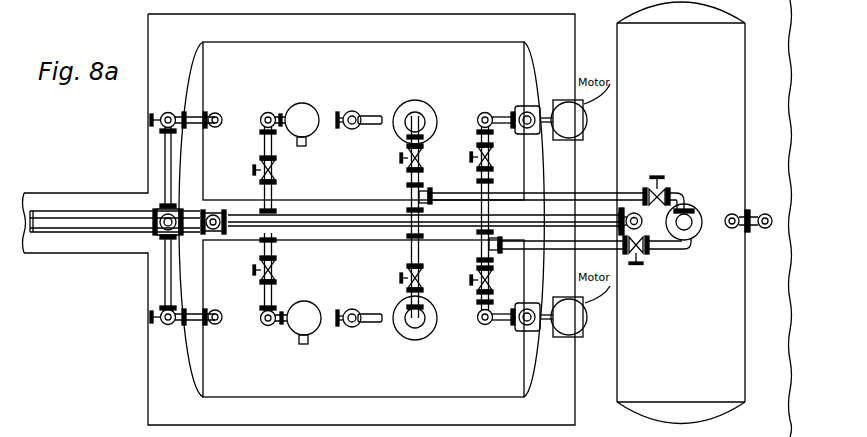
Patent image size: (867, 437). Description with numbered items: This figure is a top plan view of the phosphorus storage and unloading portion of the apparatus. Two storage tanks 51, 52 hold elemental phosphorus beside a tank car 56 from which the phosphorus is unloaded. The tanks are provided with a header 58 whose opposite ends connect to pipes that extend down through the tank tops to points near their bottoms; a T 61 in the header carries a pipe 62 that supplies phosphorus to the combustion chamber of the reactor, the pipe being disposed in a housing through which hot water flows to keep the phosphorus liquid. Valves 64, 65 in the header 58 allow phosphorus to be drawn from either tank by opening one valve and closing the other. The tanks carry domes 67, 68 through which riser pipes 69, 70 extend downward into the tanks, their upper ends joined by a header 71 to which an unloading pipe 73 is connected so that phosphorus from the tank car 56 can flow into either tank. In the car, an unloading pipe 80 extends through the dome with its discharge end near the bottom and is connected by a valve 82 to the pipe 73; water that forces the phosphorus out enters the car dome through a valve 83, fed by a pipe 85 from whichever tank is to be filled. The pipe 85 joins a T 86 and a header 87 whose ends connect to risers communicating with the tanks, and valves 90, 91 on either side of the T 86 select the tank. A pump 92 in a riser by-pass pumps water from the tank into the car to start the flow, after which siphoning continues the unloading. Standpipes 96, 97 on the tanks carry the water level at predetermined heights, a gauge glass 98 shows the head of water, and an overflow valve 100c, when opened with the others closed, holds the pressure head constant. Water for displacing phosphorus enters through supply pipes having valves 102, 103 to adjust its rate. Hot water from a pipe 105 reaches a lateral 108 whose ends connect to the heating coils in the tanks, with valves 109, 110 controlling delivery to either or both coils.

The tank 51 is at (365, 268).
The tank 52 is at (340, 72).
The tank car 56 is at (712, 303).
The header 58 is at (276, 196).
The T 61 is at (258, 213).
The pipe 62 is at (36, 211).
The valve 64 is at (256, 171).
The valve 65 is at (256, 268).
The dome 67 is at (431, 331).
The dome 68 is at (432, 116).
The riser pipe 69 is at (424, 312).
The riser pipe 70 is at (418, 112).
The header 71 is at (411, 253).
The pipe 73 is at (544, 191).
The unloading pipe 80 is at (693, 206).
The valve 82 is at (662, 176).
The valve 83 is at (634, 266).
The pipe 85 is at (544, 250).
The T 86 is at (478, 250).
The header 87 is at (495, 178).
The valve 90 is at (491, 283).
The valve 91 is at (493, 159).
The pump 92 is at (498, 112).
The standpipe 96 is at (321, 313).
The standpipe 97 is at (313, 108).
The gauge glass 98 is at (302, 146).
The overflow valve 100c is at (279, 118).
The valve 102 is at (339, 326).
The valve 103 is at (339, 128).
The pipe 105 is at (100, 212).
The lateral 108 is at (163, 151).
The valve 109 is at (148, 316).
The valve 110 is at (148, 121).